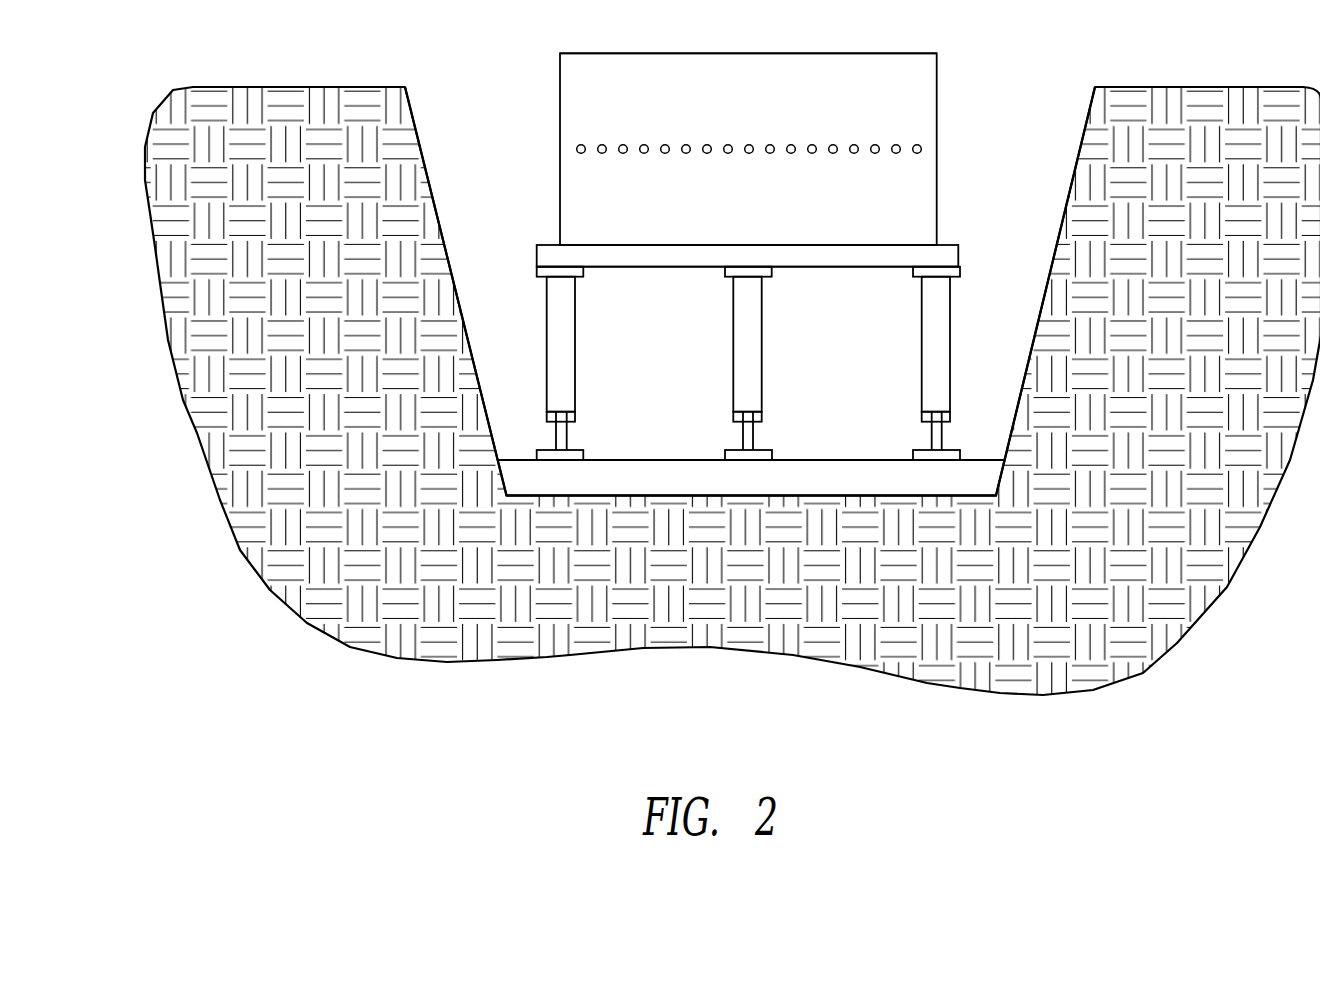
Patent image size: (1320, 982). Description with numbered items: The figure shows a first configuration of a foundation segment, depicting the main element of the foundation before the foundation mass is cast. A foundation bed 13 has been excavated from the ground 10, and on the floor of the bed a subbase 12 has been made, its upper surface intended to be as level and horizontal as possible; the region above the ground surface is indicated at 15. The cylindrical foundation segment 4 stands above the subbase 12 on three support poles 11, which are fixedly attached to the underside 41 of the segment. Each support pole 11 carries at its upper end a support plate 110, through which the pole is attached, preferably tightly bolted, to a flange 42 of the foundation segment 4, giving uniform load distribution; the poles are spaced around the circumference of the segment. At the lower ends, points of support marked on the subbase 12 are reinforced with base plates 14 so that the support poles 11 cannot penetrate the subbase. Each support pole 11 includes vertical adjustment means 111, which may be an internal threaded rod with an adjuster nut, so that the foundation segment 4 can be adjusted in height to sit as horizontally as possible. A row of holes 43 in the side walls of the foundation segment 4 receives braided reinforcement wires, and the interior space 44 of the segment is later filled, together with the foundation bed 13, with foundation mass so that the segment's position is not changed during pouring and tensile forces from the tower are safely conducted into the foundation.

The ground 10 is at (1160, 115).
The foundation bed 13 is at (1042, 225).
The subbase 12 is at (972, 473).
The ground surface 15 is at (503, 203).
The foundation segment 4 is at (922, 106).
The interior space 44 is at (733, 82).
The row of holes 43 is at (923, 150).
The flange 42 is at (952, 256).
The underside 41 is at (877, 267).
The support plate 110 is at (537, 270).
The support pole 11 is at (567, 348).
The vertical adjustment means 111 is at (733, 418).
The base plate 14 is at (573, 455).